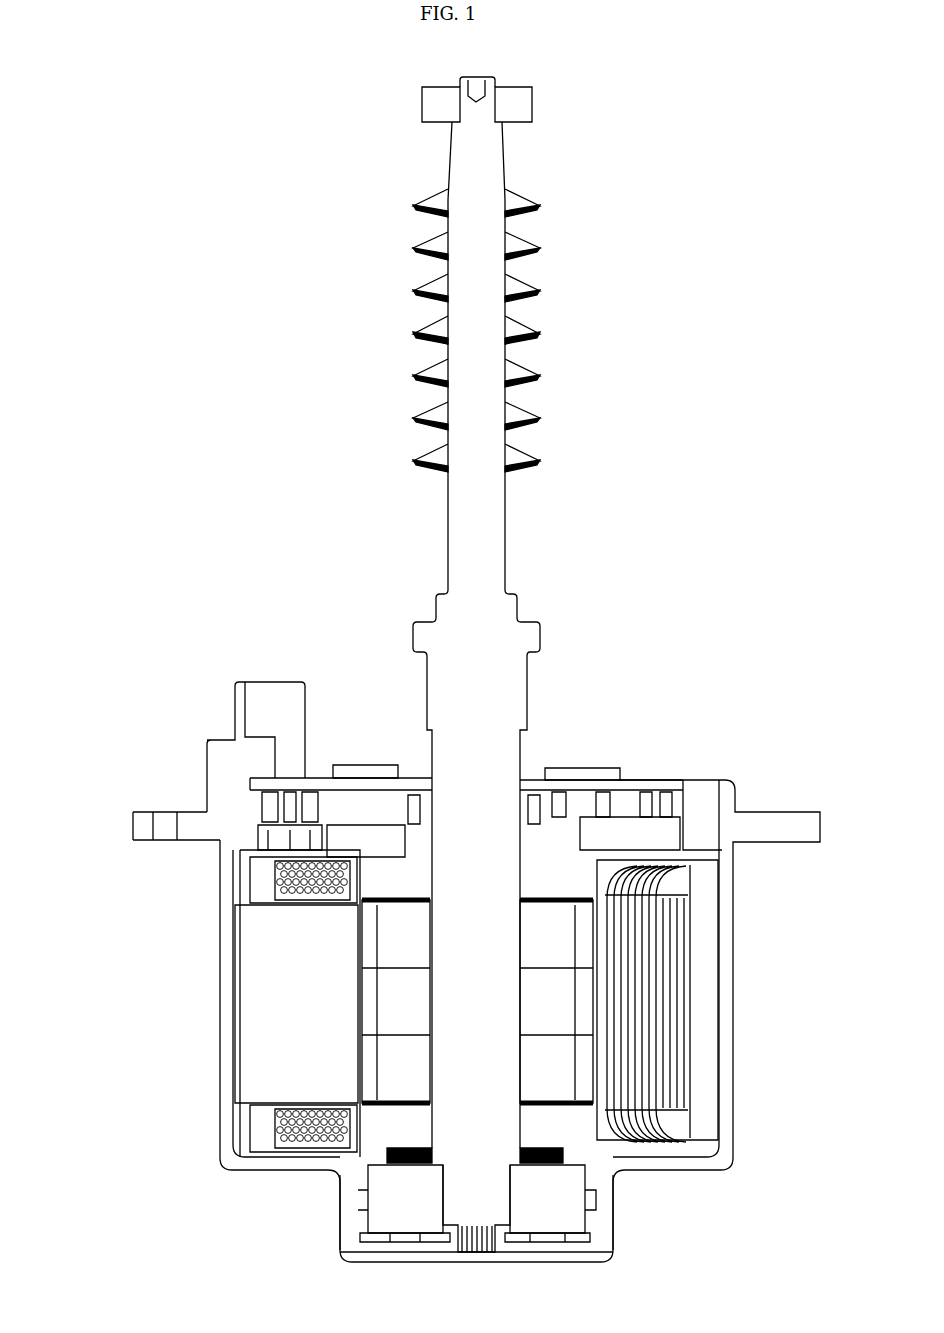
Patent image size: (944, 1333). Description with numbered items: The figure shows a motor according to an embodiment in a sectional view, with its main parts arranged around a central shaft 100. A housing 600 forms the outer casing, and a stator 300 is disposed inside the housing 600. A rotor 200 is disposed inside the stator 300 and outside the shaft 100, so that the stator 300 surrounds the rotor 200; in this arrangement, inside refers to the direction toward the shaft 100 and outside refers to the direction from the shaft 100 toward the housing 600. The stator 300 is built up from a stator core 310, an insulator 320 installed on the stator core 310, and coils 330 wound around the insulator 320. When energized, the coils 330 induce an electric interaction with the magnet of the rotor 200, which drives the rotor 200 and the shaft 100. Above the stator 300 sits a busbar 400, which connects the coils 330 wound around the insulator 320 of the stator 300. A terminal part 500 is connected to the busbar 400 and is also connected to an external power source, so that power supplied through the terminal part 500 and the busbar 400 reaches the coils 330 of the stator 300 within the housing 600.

The shaft 100 is at (547, 713).
The rotor 200 is at (560, 942).
The stator 300 is at (642, 1032).
The stator core 310 is at (270, 1052).
The insulator 320 is at (268, 897).
The coils 330 is at (255, 850).
The busbar 400 is at (262, 815).
The terminal part 500 is at (230, 713).
The housing 600 is at (745, 1130).